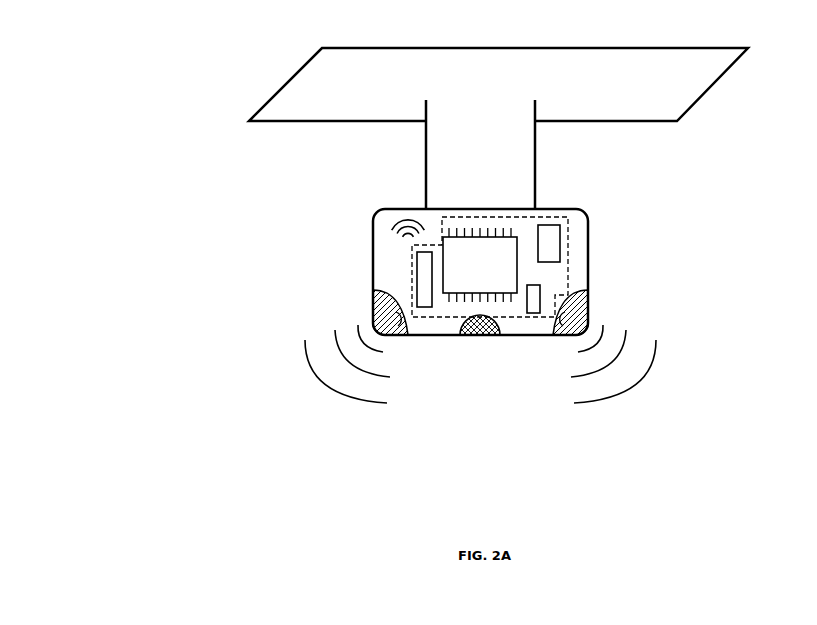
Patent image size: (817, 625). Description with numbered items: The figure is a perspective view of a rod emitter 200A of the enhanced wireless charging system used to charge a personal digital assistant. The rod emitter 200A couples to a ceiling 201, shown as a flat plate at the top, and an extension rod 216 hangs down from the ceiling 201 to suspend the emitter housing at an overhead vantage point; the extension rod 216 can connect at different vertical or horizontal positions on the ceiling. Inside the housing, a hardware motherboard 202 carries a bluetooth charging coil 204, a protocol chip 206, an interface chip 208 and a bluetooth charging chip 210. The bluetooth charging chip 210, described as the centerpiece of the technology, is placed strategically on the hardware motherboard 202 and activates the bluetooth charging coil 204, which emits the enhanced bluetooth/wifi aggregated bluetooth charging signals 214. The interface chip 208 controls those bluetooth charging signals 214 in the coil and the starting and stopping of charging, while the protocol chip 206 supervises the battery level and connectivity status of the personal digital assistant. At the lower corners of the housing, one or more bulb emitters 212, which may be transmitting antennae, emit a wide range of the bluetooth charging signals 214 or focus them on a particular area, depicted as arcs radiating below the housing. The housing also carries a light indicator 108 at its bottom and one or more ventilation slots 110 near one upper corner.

The light indicator 108 is at (497, 335).
The ventilation slots 110 is at (388, 234).
The rod emitter 200A is at (325, 444).
The ceiling 201 is at (707, 93).
The hardware motherboard 202 is at (470, 215).
The bluetooth charging coil 204 is at (412, 280).
The protocol chip 206 is at (560, 232).
The interface chip 208 is at (543, 287).
The bluetooth charging chip 210 is at (448, 295).
The bulb emitters 212 is at (372, 318).
The bluetooth charging signals 214 is at (647, 375).
The extension rod 216 is at (513, 135).